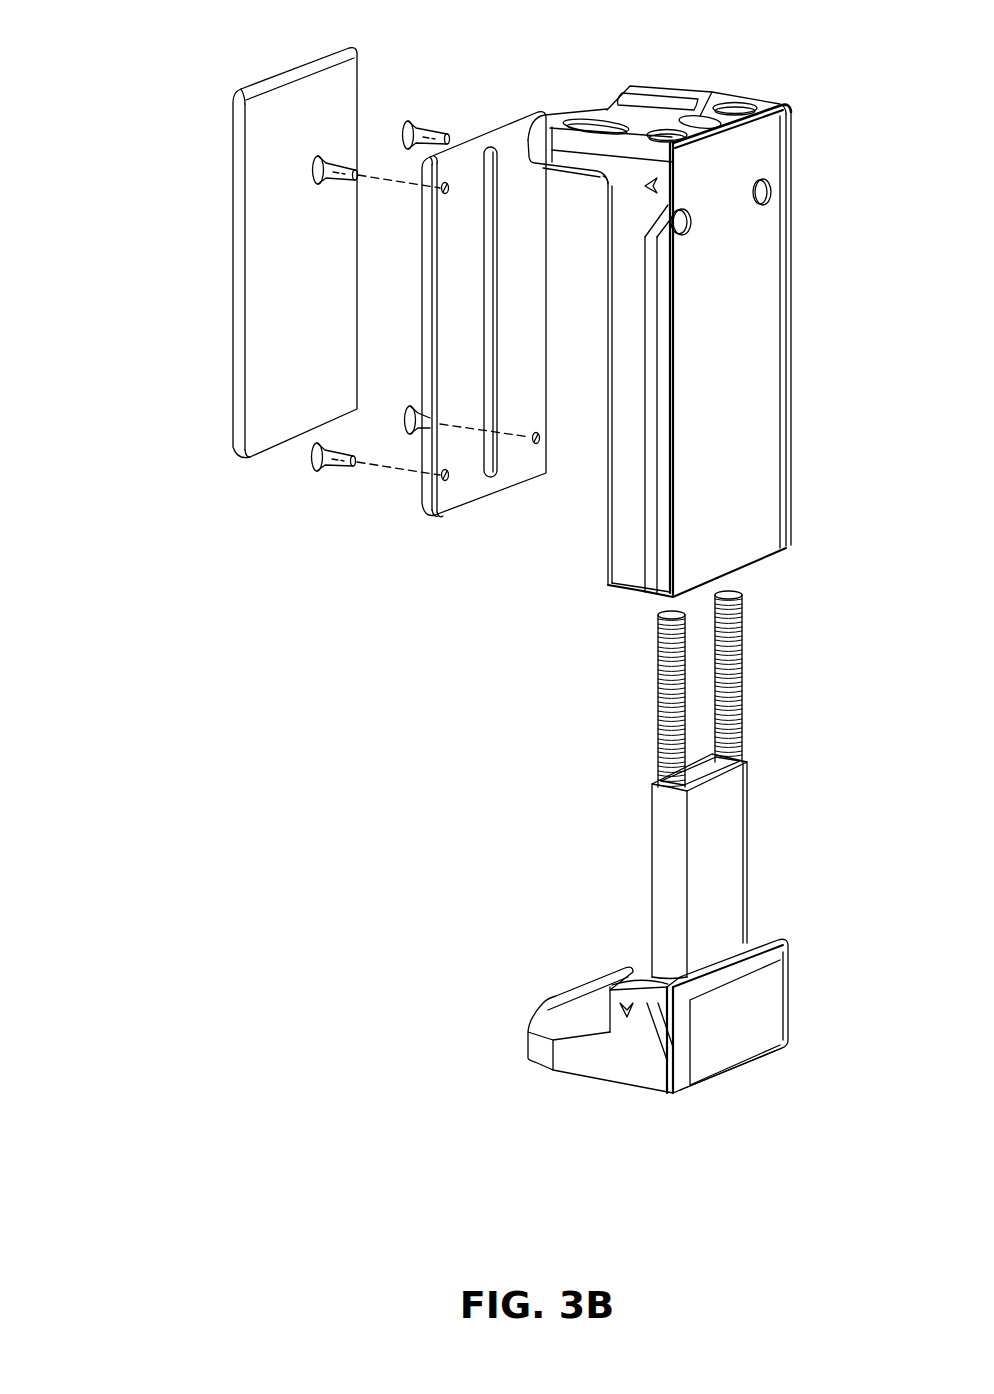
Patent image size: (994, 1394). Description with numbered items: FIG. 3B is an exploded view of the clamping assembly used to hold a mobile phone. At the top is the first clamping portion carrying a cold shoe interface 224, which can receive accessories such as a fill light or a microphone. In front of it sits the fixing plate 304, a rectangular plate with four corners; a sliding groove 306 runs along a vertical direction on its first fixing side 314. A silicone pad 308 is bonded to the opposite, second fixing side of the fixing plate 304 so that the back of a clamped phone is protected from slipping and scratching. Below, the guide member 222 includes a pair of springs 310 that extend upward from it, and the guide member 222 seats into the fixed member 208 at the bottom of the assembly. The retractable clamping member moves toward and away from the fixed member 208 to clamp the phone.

The fixed member 208 is at (617, 1062).
The guide member 222 is at (652, 887).
The cold shoe interface 224 is at (663, 117).
The fixing plate 304 is at (412, 497).
The sliding groove 306 is at (497, 476).
The silicone pad 308 is at (218, 133).
The pair of springs 310 is at (643, 705).
The first fixing side 314 is at (513, 132).